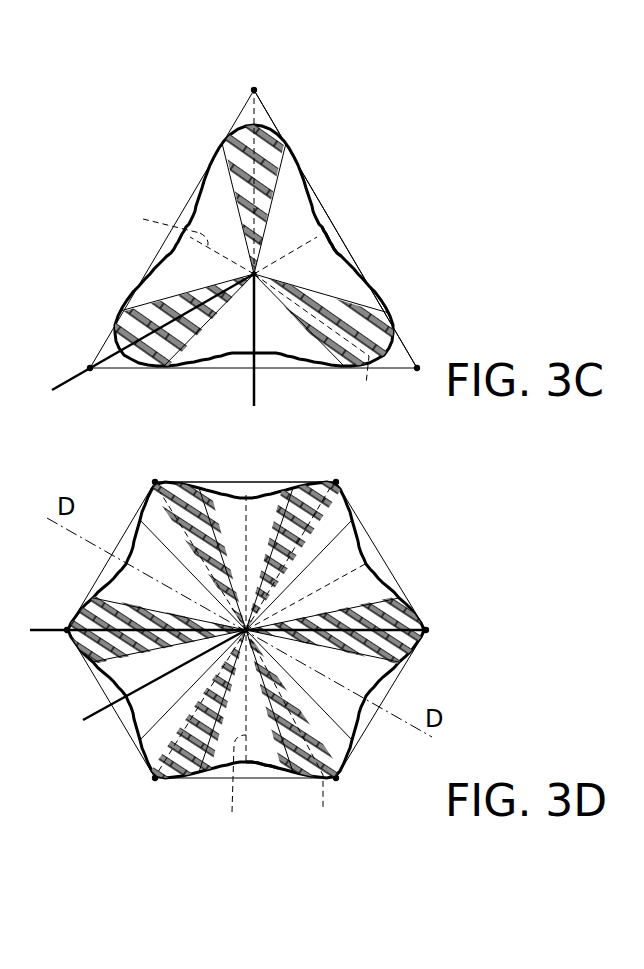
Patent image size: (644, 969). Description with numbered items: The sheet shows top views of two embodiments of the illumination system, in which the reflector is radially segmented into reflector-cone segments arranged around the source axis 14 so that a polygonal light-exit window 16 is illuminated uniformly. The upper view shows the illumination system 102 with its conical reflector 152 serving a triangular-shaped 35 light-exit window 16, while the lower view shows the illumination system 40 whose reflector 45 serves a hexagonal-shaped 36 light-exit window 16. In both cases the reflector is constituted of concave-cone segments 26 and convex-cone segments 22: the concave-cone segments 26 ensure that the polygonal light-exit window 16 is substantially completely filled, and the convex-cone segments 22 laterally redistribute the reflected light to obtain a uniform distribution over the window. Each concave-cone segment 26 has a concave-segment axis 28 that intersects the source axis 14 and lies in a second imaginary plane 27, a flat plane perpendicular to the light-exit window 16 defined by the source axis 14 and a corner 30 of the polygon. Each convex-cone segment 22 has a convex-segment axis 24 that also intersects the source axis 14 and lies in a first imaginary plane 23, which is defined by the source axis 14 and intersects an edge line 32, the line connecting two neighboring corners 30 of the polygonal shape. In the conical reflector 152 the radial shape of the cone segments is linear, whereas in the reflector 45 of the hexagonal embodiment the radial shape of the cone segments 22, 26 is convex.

In FIG. 3C, the source axis 14 is at (254, 277).
In FIG. 3D, the source axis 14 is at (248, 627).
In FIG. 3C, the light-exit window 16 is at (323, 210).
In FIG. 3D, the light-exit window 16 is at (262, 486).
In FIG. 3C, the convex-cone segment 22 is at (215, 203).
In FIG. 3D, the convex-cone segment 22 is at (270, 753).
In FIG. 3C, the first imaginary plane 23 is at (273, 340).
In FIG. 3D, the first imaginary plane 23 is at (93, 723).
In FIG. 3C, the convex-segment axis 24 is at (215, 182).
In FIG. 3D, the convex-segment axis 24 is at (262, 663).
In FIG. 3C, the concave-cone segment 26 is at (380, 316).
In FIG. 3D, the concave-cone segment 26 is at (336, 746).
In FIG. 3C, the second imaginary plane 27 is at (63, 382).
In FIG. 3D, the second imaginary plane 27 is at (47, 633).
In FIG. 3C, the concave-segment axis 28 is at (318, 343).
In FIG. 3D, the concave-segment axis 28 is at (291, 734).
In FIG. 3C, the corner 30 is at (254, 90).
In FIG. 3D, the corner 30 is at (155, 482).
In FIG. 3C, the edge line 32 is at (267, 112).
In FIG. 3D, the edge line 32 is at (220, 482).
In FIG. 3C, the triangular shape 35 is at (188, 119).
In FIG. 3D, the hexagonal shape 36 is at (102, 480).
In FIG. 3D, the illumination system 40 is at (406, 494).
In FIG. 3D, the reflector 45 is at (398, 587).
In FIG. 3C, the illumination system 102 is at (437, 78).
In FIG. 3C, the conical reflector 152 is at (337, 253).